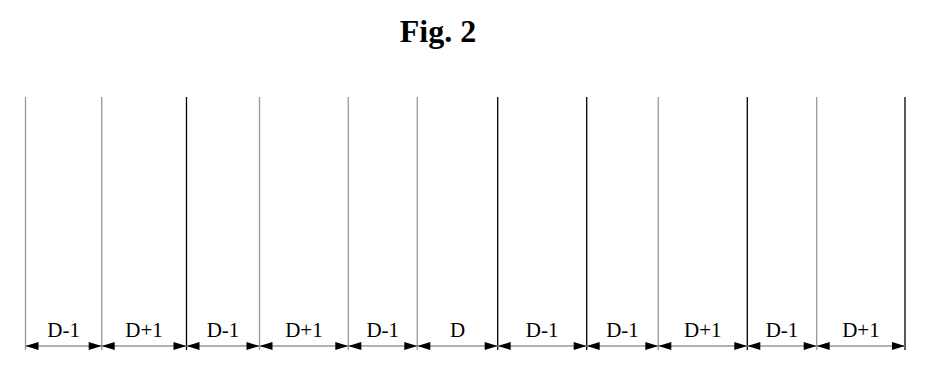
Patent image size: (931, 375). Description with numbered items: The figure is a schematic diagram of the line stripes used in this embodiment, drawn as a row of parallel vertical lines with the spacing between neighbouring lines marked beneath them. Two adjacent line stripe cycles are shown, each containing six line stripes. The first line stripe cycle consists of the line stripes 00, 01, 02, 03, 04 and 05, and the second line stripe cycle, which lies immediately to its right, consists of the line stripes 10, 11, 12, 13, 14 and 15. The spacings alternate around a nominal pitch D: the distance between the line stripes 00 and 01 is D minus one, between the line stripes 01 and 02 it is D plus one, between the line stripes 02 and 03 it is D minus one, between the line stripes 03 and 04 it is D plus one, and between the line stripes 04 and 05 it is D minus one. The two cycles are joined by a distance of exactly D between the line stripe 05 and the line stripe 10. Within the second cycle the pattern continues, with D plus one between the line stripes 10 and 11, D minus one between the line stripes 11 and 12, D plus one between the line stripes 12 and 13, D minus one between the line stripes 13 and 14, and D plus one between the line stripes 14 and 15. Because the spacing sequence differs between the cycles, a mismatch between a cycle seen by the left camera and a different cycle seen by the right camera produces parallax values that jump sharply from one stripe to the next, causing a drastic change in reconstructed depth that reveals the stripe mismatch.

The line stripe 00 is at (27, 201).
The line stripe 01 is at (105, 201).
The line stripe 02 is at (187, 201).
The line stripe 03 is at (259, 201).
The line stripe 04 is at (348, 201).
The line stripe 05 is at (418, 201).
The line stripe 10 is at (500, 201).
The line stripe 11 is at (589, 201).
The line stripe 12 is at (659, 201).
The line stripe 13 is at (749, 201).
The line stripe 14 is at (820, 201).
The line stripe 15 is at (908, 201).